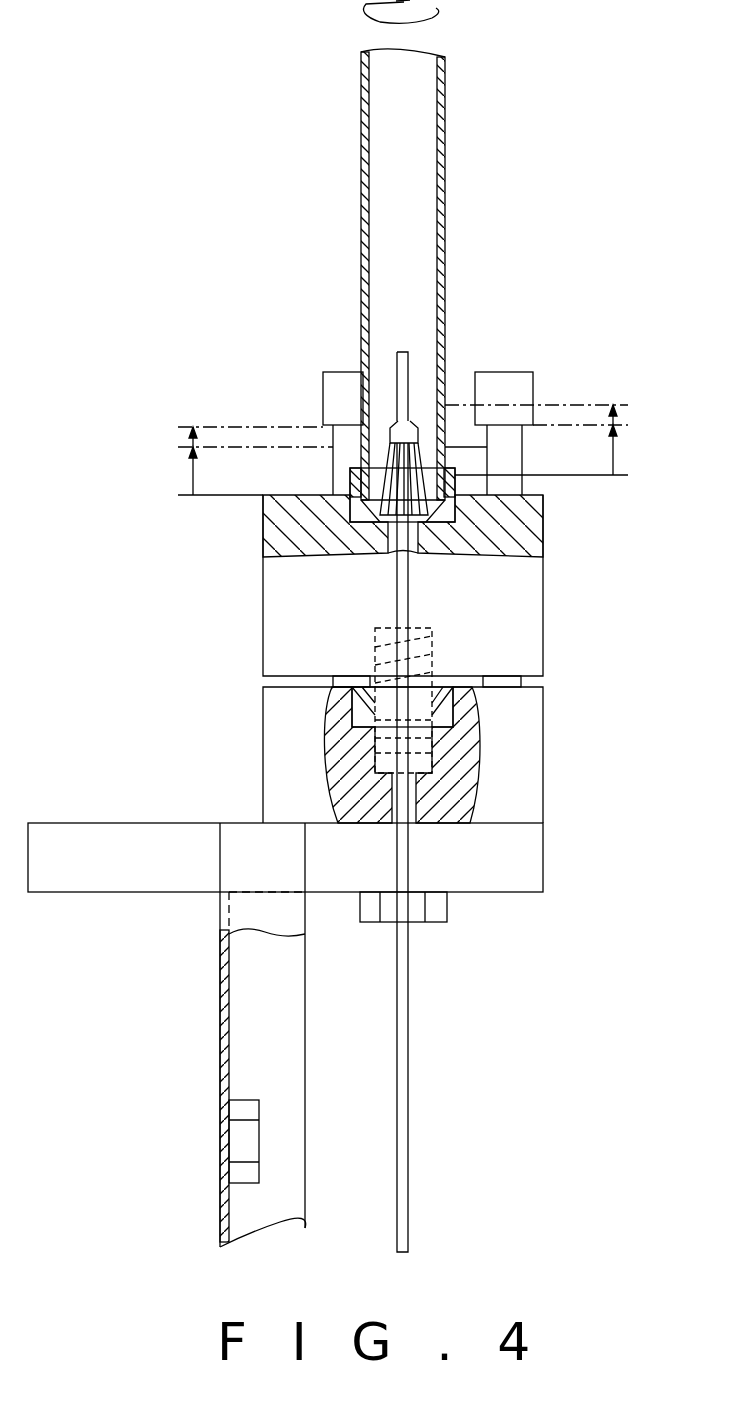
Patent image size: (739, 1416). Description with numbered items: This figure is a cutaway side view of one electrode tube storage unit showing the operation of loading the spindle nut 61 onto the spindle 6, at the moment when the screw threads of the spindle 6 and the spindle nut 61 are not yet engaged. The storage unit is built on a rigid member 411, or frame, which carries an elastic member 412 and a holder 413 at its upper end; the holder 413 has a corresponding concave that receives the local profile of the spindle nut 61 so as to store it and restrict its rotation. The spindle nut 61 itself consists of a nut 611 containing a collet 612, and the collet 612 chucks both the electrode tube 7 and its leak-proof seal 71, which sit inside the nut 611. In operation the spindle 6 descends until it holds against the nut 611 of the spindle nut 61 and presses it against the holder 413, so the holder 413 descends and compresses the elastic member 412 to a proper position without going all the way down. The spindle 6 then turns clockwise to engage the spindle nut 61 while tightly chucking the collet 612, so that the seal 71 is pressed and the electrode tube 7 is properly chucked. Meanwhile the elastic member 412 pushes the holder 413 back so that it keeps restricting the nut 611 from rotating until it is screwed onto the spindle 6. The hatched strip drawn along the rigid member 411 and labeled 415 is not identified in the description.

The spindle 6 is at (433, 147).
The electrode tube 7 is at (402, 372).
The leak-proof seal 71 is at (407, 420).
The spindle nut 61 is at (469, 388).
The nut 611 is at (432, 480).
The collet 612 is at (415, 443).
The holder 413 is at (307, 600).
The elastic member 412 is at (378, 680).
The rigid member 411 is at (268, 860).
The hatched strip 415 is at (225, 1030).